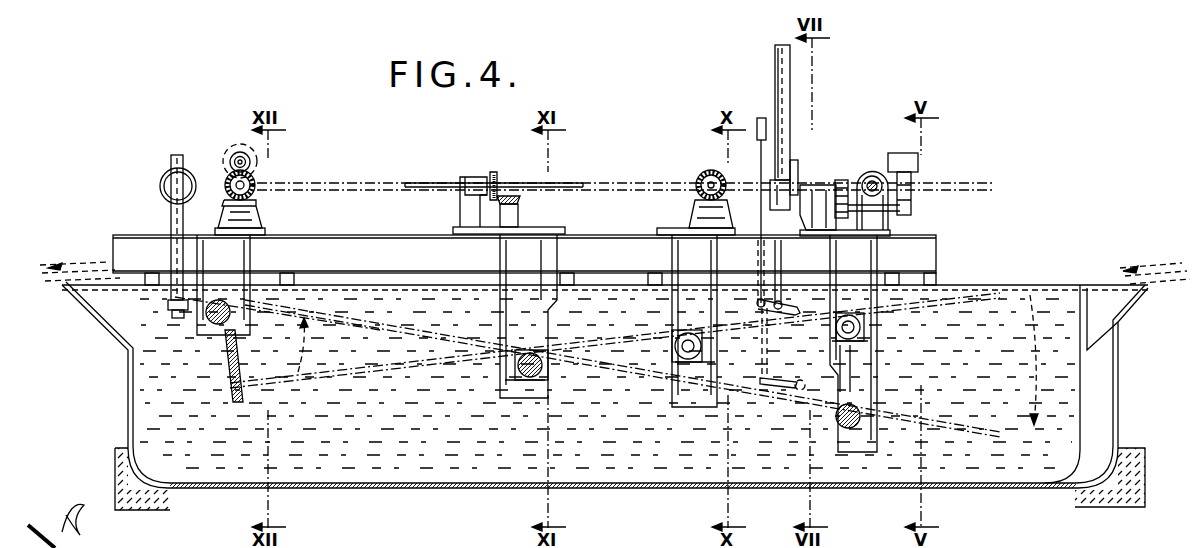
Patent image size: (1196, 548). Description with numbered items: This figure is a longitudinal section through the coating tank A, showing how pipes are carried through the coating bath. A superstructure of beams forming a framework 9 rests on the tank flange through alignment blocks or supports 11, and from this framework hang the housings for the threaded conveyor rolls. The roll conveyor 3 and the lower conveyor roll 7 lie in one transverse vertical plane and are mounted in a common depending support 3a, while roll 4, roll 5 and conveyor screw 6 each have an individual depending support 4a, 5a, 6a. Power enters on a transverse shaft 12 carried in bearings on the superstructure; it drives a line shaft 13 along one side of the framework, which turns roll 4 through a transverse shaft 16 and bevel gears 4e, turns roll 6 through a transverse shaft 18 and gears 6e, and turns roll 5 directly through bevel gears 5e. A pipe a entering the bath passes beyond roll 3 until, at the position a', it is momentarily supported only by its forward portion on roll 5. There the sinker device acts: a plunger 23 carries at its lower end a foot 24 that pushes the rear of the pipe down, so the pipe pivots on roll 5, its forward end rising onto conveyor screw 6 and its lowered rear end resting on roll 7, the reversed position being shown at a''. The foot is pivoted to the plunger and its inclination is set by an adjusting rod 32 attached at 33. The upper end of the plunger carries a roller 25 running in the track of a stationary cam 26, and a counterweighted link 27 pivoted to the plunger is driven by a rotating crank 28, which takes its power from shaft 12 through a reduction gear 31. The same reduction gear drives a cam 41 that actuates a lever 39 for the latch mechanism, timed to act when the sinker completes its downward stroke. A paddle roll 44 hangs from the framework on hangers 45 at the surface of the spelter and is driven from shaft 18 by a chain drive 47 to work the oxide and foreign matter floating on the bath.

The coating tank A is at (612, 458).
The pipe a is at (41, 288).
The pipe position a' is at (1005, 267).
The submerged pipe position a'' is at (990, 475).
The roll conveyor 3 is at (862, 332).
The common depending support 3a is at (835, 385).
The roll 4 is at (684, 352).
The depending support 4a is at (682, 395).
The bevel gears 4e is at (698, 203).
The roll 5 is at (536, 370).
The depending support 5a is at (526, 398).
The bevel gears 5e is at (510, 196).
The conveyor screw 6 is at (218, 324).
The depending support 6a is at (232, 262).
The gears 6e is at (258, 200).
The conveyor roll 7 is at (860, 425).
The framework 9 is at (342, 235).
The alignment blocks 11 is at (130, 284).
The transverse shaft 12 is at (873, 178).
The line shaft 13 is at (420, 183).
The transverse shaft 16 is at (706, 178).
The transverse shaft 18 is at (255, 172).
The plunger 23 is at (781, 258).
The foot 24 is at (772, 378).
The roller 25 is at (773, 60).
The stationary cam 26 is at (775, 102).
The counterweighted link 27 is at (772, 200).
The rotating crank 28 is at (798, 172).
The reduction gear 31 is at (862, 178).
The adjusting rod 32 is at (760, 258).
The adjustable attachment 33 is at (766, 312).
The lever 39 is at (912, 180).
The cam 41 is at (905, 200).
The paddle roll 44 is at (176, 302).
The hangers 45 is at (171, 216).
The chain drive 47 is at (231, 170).